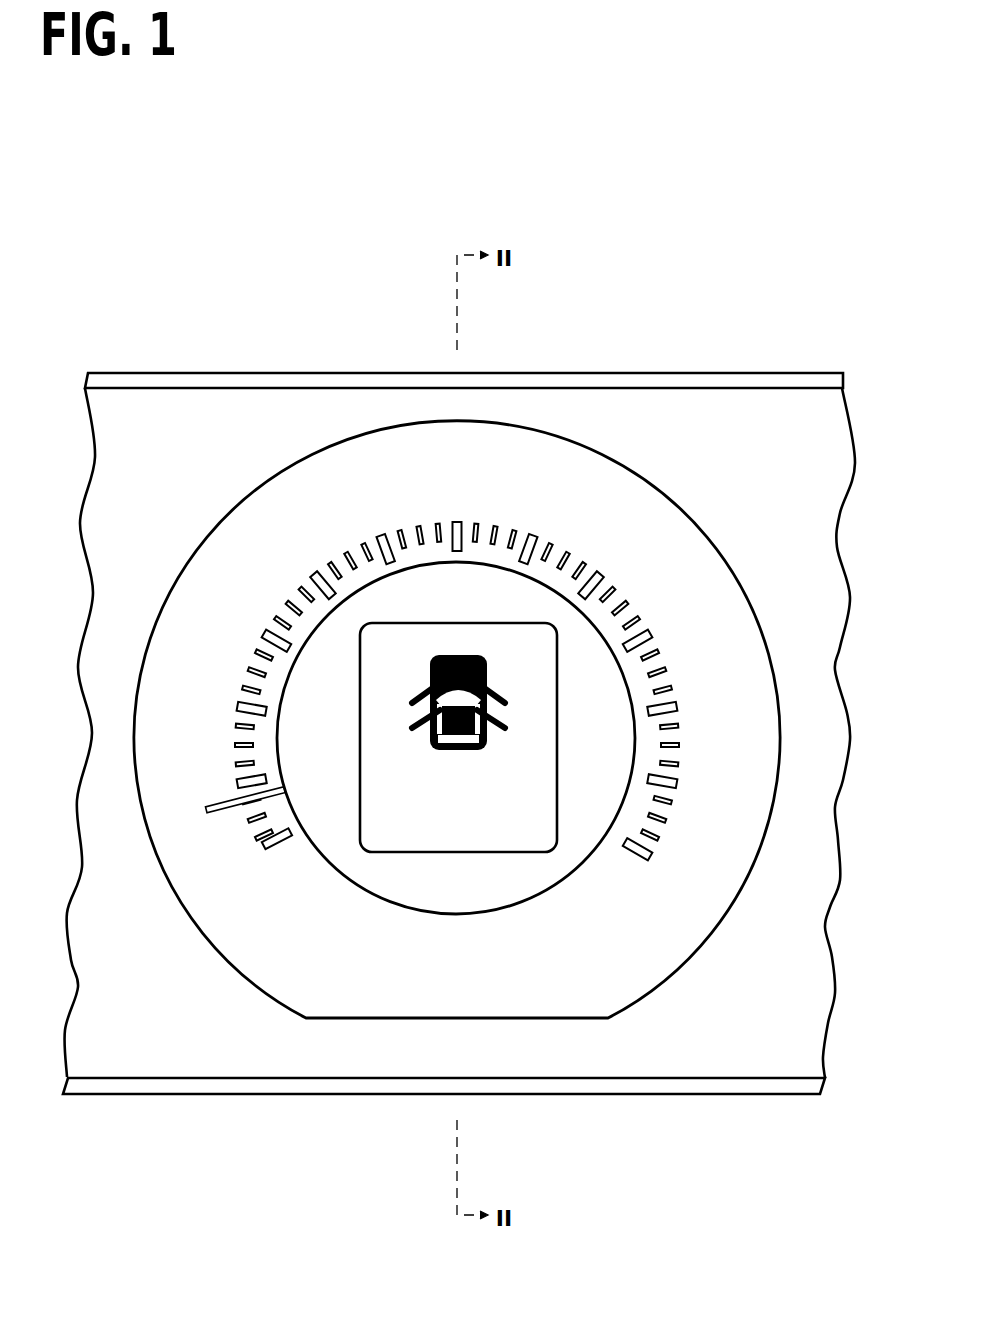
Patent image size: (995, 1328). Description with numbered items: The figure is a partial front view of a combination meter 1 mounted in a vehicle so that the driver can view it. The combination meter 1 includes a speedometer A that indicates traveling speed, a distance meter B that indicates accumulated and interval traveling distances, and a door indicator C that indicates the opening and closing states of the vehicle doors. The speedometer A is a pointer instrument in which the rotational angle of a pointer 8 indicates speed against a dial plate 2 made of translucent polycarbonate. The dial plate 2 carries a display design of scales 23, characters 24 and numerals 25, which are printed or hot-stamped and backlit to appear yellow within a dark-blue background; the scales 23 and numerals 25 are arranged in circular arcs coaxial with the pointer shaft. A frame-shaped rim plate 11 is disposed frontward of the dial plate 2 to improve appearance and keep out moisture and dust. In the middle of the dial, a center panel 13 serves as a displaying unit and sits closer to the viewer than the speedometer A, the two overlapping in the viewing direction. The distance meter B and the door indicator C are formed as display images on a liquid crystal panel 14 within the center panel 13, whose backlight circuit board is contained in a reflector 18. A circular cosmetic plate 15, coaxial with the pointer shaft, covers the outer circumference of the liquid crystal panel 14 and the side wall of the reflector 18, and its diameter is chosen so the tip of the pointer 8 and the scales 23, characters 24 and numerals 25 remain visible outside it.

The combination meter 1 is at (60, 218).
The dial plate 2 is at (537, 997).
The pointer 8 is at (203, 813).
The rim plate 11 is at (585, 1052).
The center panel 13 is at (406, 557).
The liquid crystal panel 14 is at (447, 566).
The cosmetic plate 15 is at (487, 590).
The reflector 18 is at (582, 867).
The scales 23 is at (285, 842).
The characters 24 is at (423, 935).
The numerals 25 is at (213, 893).
The speedometer A is at (457, 728).
The distance meter B is at (356, 768).
The door indicator C is at (515, 660).